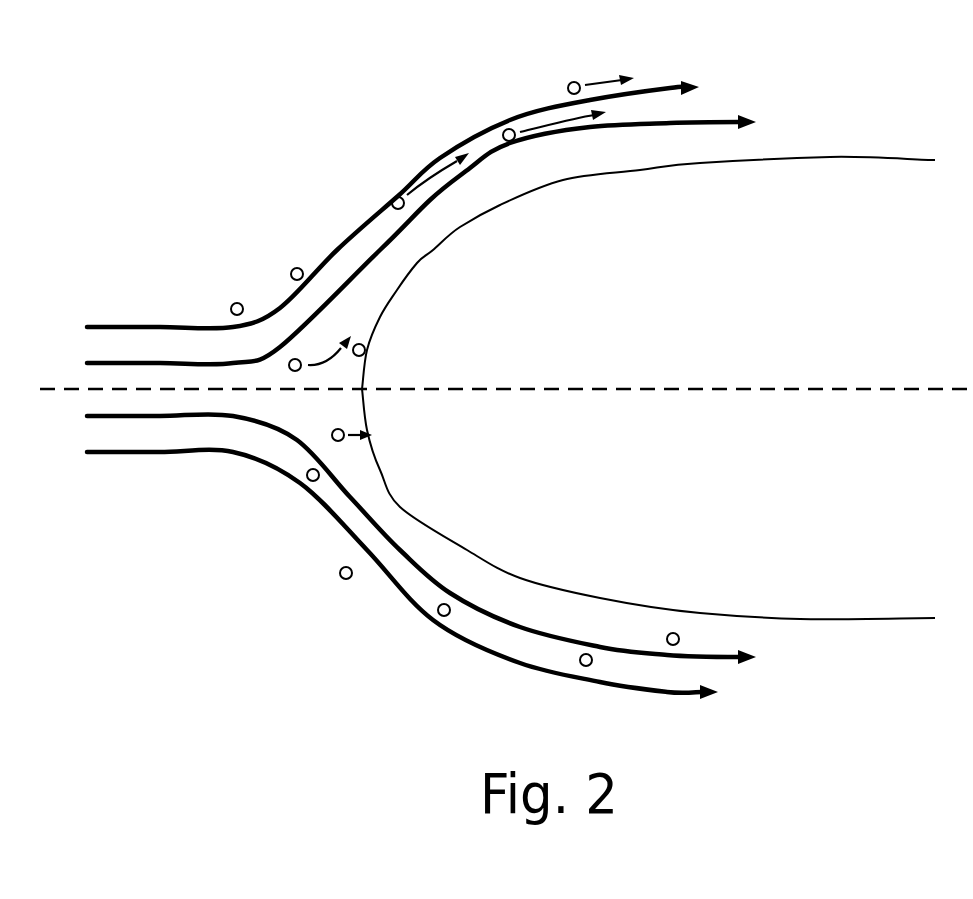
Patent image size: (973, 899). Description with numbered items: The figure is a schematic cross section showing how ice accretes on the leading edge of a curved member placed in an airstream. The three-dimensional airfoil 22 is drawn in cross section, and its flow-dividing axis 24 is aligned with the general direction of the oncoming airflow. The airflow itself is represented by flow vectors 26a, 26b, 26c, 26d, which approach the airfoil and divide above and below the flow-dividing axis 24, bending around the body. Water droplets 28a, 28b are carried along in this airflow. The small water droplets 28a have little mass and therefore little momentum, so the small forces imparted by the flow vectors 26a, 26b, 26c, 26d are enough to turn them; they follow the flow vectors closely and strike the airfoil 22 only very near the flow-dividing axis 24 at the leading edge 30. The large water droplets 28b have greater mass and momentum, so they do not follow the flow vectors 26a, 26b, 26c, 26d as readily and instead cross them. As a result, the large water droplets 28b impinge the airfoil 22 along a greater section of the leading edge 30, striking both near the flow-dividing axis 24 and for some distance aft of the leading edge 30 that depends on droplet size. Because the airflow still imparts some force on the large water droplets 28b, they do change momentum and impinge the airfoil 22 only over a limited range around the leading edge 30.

The airfoil 22 is at (602, 284).
The flow-dividing axis 24 is at (707, 360).
The flow vector 26a is at (187, 327).
The flow vector 26b is at (383, 242).
The flow vector 26c is at (352, 498).
The flow vector 26d is at (490, 650).
The small water droplets 28a is at (568, 88).
The large water droplets 28b is at (343, 432).
The leading edge 30 is at (362, 389).